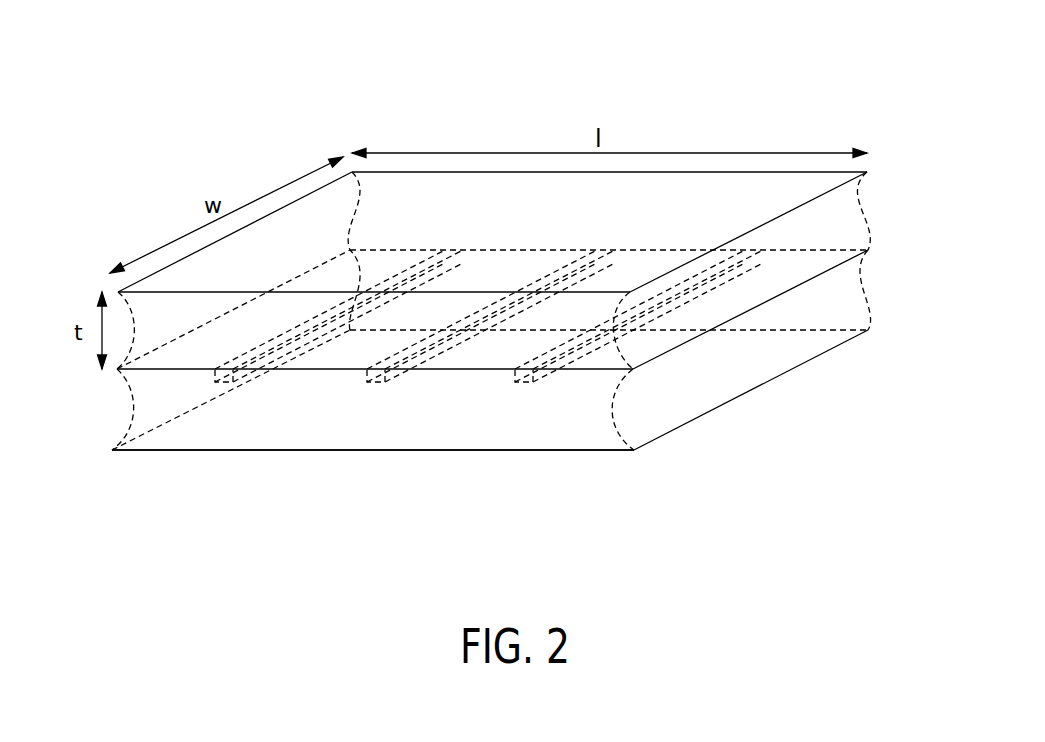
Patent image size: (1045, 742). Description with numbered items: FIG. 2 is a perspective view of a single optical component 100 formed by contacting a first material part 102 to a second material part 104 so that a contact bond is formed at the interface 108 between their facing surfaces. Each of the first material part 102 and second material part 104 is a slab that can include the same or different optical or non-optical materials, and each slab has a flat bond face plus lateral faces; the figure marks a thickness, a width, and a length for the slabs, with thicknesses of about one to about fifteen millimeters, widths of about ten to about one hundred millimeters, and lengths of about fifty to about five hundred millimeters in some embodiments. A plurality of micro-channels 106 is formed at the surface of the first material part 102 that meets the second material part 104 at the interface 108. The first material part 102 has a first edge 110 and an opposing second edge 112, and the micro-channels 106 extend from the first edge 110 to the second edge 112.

The optical component 100 is at (757, 88).
The first material part 102 is at (230, 433).
The second material part 104 is at (178, 320).
The micro-channels 106 is at (519, 388).
The interface 108 is at (117, 369).
The first edge 110 is at (554, 419).
The second edge 112 is at (820, 239).